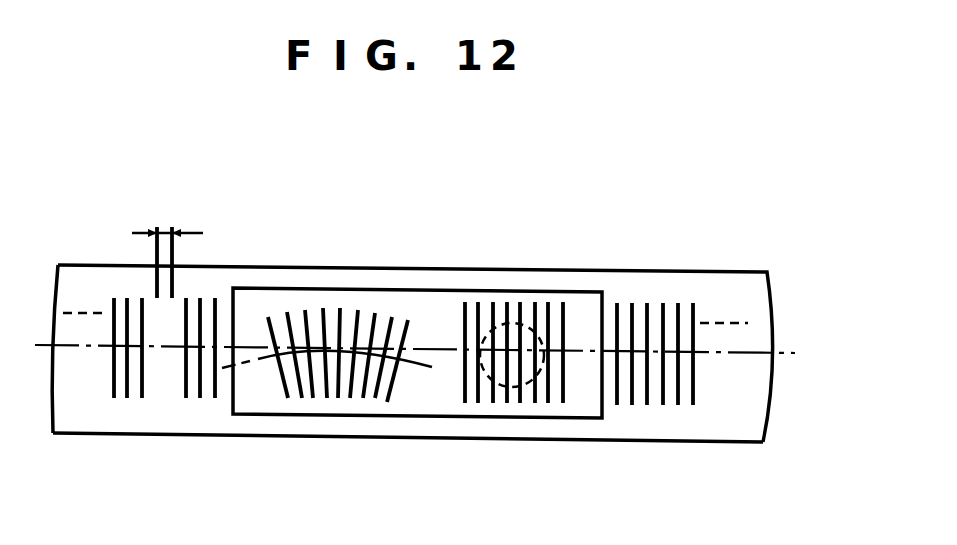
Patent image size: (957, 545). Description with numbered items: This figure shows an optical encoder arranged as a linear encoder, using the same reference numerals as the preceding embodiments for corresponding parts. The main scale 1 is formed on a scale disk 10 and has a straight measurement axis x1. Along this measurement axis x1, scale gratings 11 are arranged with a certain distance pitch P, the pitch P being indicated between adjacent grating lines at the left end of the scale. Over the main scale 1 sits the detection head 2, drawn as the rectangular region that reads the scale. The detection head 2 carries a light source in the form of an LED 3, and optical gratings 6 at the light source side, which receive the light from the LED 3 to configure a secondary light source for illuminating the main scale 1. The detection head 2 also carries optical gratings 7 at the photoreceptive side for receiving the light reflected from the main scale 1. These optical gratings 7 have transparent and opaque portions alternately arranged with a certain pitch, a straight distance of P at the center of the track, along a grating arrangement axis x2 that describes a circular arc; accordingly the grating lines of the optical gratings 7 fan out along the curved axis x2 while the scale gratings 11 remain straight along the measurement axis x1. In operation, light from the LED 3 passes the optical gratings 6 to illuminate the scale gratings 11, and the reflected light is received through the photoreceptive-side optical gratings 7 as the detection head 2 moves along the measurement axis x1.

The main scale 1 is at (717, 270).
The detection head 2 is at (437, 288).
The LED 3 is at (547, 310).
The optical gratings at the light source side 6 is at (455, 387).
The optical gratings at the photoreceptive side 7 is at (293, 317).
The scale disk 10 is at (707, 412).
The scale gratings 11 is at (633, 312).
The pitch P is at (167, 240).
The measurement axis x1 is at (772, 352).
The grating arrangement axis x2 is at (248, 363).